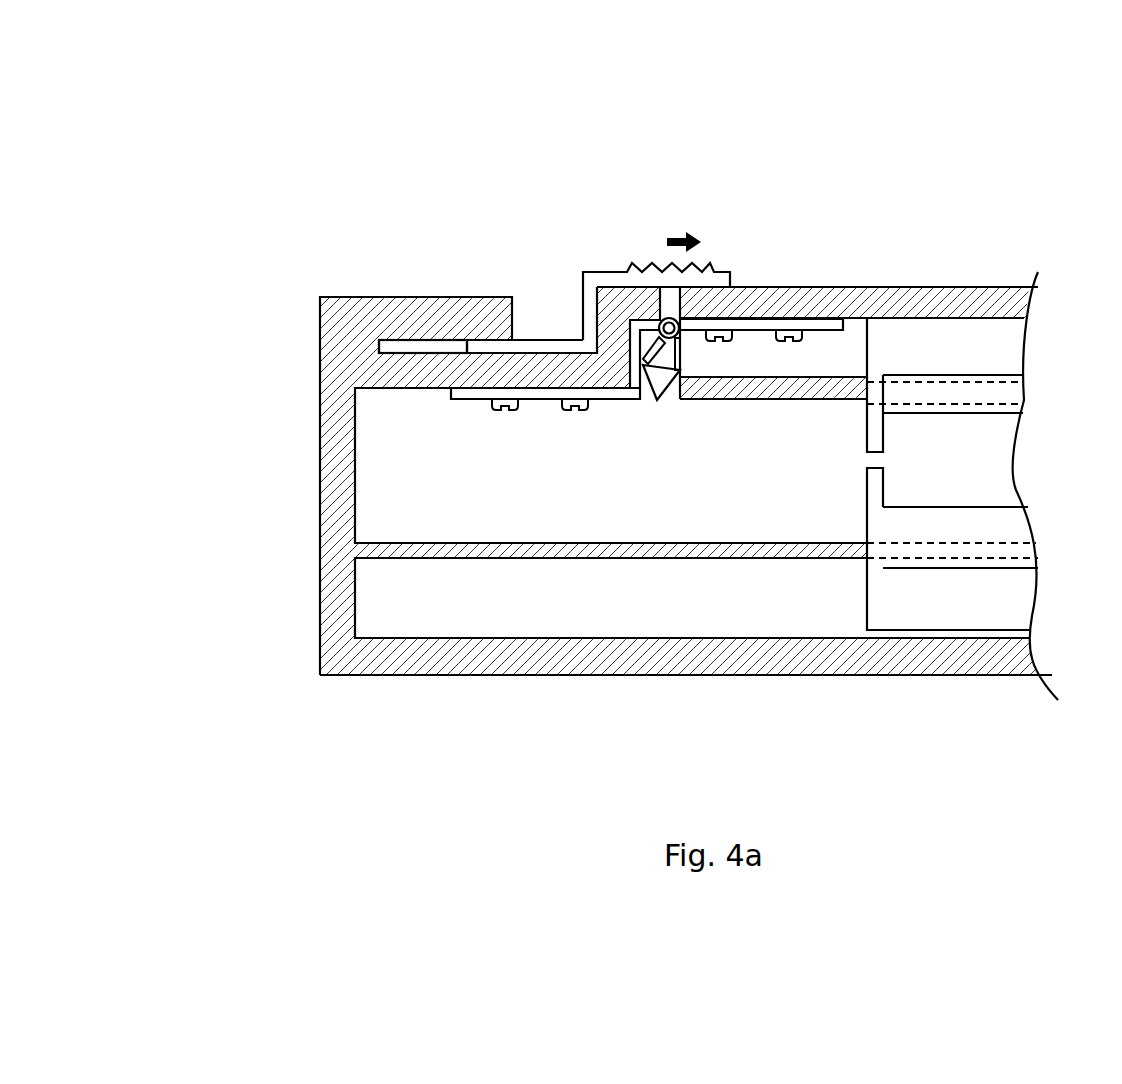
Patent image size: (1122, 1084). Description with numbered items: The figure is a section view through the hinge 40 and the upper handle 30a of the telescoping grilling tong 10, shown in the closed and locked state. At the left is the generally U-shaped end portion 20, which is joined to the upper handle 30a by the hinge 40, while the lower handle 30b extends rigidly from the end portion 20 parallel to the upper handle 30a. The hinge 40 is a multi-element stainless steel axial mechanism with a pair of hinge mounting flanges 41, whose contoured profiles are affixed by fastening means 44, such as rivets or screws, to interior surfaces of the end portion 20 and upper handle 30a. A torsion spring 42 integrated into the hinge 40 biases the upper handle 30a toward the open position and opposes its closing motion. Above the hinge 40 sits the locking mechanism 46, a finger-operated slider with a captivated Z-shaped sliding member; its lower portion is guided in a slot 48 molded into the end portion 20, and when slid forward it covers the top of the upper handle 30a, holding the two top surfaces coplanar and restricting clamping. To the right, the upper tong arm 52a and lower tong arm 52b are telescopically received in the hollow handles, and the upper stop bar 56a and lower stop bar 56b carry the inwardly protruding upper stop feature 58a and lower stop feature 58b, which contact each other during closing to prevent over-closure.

The telescoping grilling tong 10 is at (188, 172).
The end portion 20 is at (340, 297).
The upper handle 30a is at (818, 378).
The lower handle 30b is at (953, 675).
The hinge 40 is at (676, 322).
The hinge mounting flange 41 is at (782, 323).
The spring 42 is at (661, 382).
The fastening means 44 is at (778, 341).
The locking mechanism 46 is at (598, 272).
The slot 48 is at (530, 328).
The upper tong arm 52a is at (1004, 349).
The lower tong arm 52b is at (1011, 607).
The upper stop bar 56a is at (1000, 422).
The lower stop bar 56b is at (1011, 511).
The upper stop feature 58a is at (865, 420).
The lower stop feature 58b is at (865, 508).